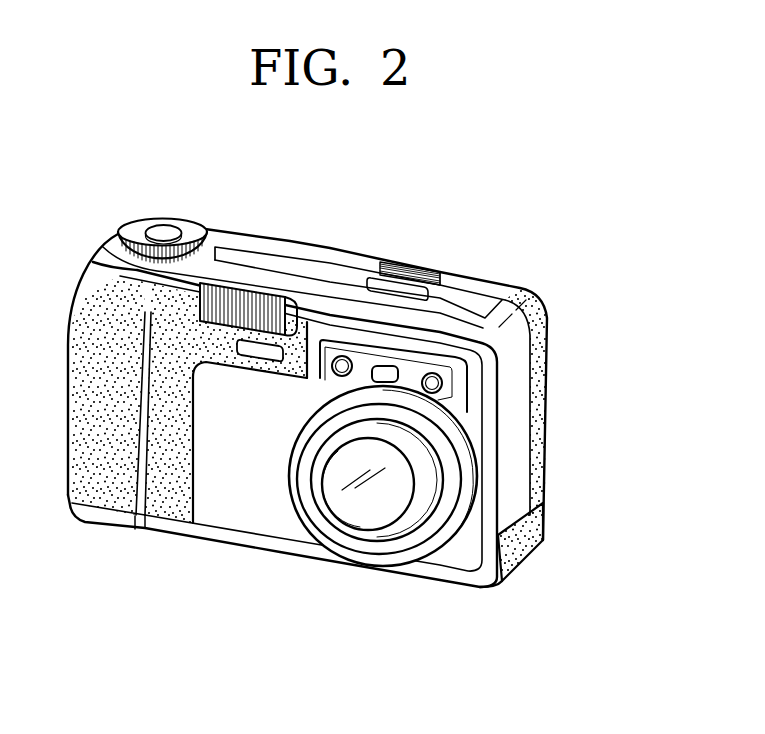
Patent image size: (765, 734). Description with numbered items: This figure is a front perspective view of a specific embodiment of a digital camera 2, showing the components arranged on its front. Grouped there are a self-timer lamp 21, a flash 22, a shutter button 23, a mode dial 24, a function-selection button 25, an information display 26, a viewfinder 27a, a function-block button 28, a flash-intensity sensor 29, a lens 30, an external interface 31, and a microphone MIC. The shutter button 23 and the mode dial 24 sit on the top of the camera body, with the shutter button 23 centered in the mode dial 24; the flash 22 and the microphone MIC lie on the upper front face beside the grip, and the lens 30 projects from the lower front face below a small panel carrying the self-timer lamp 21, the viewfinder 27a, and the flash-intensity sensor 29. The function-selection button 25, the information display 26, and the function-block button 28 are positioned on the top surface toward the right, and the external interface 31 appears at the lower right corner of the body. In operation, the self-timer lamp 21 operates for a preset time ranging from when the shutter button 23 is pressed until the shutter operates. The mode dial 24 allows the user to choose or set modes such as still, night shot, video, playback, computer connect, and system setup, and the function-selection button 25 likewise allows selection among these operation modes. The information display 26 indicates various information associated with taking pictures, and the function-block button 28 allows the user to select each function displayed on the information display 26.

The digital camera 2 is at (240, 609).
The self-timer lamp 21 is at (341, 356).
The flash 22 is at (241, 297).
The shutter button 23 is at (162, 230).
The mode dial 24 is at (133, 231).
The function-selection button 25 is at (395, 262).
The information display 26 is at (403, 287).
The viewfinder 27a is at (389, 368).
The function-block button 28 is at (428, 268).
The flash-intensity sensor 29 is at (443, 383).
The lens 30 is at (392, 486).
The external interface 31 is at (538, 526).
The microphone MIC is at (267, 348).